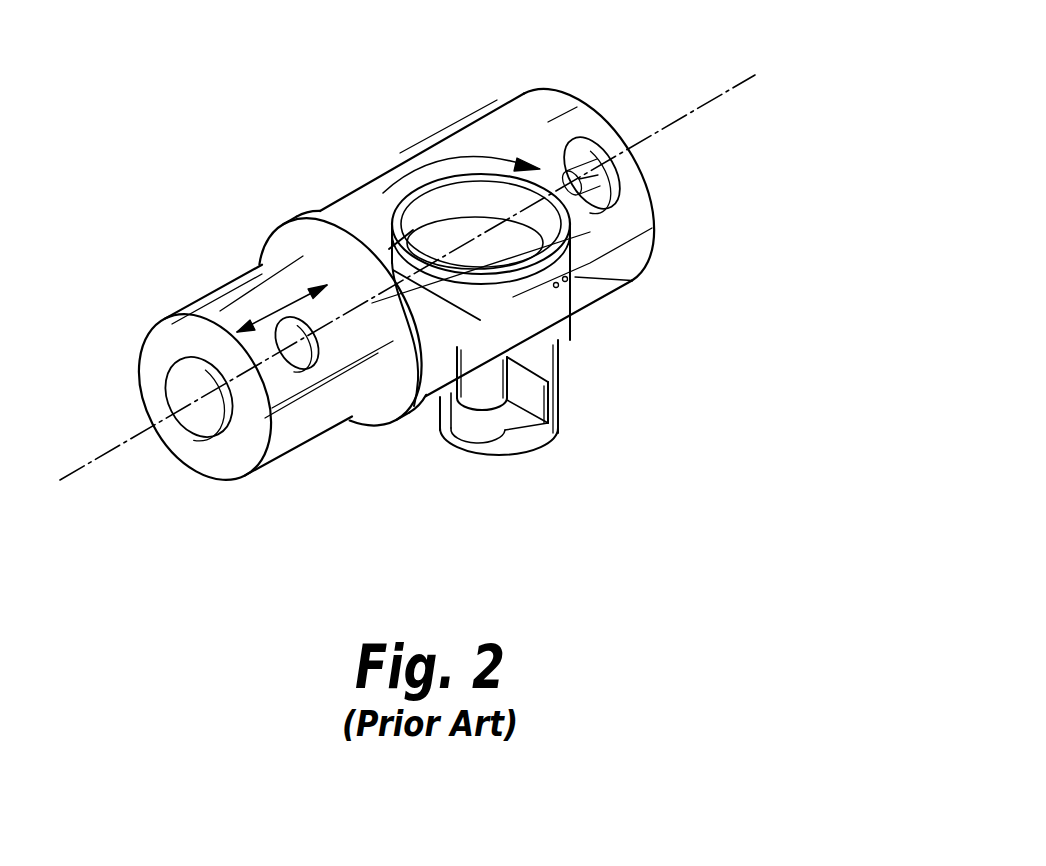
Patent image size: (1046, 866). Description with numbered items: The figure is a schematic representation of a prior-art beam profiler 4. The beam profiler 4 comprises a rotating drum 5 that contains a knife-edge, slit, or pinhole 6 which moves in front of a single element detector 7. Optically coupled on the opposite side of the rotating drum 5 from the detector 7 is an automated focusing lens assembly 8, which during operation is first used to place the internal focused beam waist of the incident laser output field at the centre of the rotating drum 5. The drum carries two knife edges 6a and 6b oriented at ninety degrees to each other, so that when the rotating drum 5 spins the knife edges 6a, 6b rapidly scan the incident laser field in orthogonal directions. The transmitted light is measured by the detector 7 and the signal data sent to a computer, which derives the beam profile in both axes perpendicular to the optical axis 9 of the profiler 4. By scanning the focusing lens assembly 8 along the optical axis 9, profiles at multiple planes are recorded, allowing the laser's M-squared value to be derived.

The beam profiler 4 is at (200, 128).
The rotating drum 5 is at (557, 327).
The knife-edge, slit, or pinhole 6 is at (478, 293).
The knife edge 6a is at (450, 282).
The knife edge 6b is at (630, 277).
The single element detector 7 is at (578, 152).
The automated focusing lens assembly 8 is at (287, 417).
The optical axis 9 is at (693, 110).